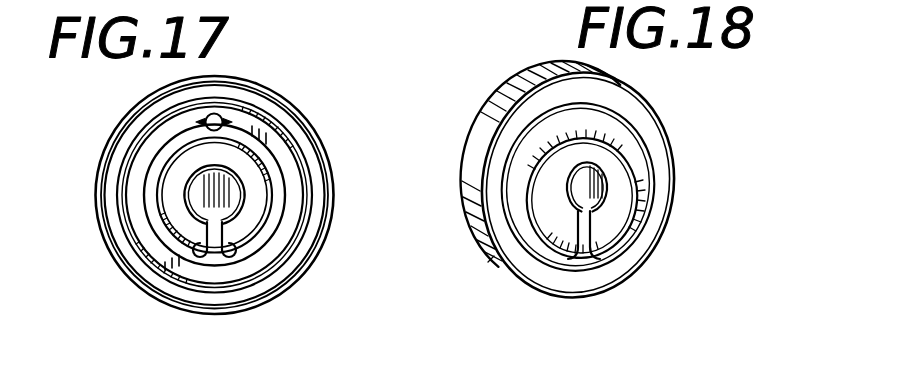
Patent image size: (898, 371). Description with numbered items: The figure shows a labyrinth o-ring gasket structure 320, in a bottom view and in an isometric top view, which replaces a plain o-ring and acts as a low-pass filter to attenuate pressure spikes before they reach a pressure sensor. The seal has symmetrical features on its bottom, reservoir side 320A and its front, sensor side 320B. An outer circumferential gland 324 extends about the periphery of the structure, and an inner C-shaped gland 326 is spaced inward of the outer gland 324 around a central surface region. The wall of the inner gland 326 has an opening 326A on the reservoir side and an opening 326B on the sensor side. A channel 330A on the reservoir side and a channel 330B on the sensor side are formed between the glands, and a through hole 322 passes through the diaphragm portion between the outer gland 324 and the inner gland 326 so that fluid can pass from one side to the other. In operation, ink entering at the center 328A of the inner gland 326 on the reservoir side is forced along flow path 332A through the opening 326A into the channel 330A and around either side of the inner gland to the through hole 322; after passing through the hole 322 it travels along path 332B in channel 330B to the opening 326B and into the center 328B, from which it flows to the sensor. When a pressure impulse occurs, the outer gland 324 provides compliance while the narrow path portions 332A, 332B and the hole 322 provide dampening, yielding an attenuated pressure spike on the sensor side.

In FIG. 17, the labyrinth o-ring gasket structure 320 is at (316, 269).
In FIG. 18, the labyrinth o-ring gasket structure 320 is at (656, 238).
In FIG. 17, the reservoir side 320A is at (294, 196).
In FIG. 18, the sensor side 320B is at (507, 216).
In FIG. 17, the through hole 322 is at (219, 115).
In FIG. 17, the outer circumferential gland 324 is at (118, 159).
In FIG. 18, the outer circumferential gland 324 is at (646, 114).
In FIG. 17, the inner C-shaped gland 326 is at (279, 150).
In FIG. 18, the inner C-shaped gland 326 is at (620, 172).
In FIG. 17, the opening 326A is at (227, 255).
In FIG. 18, the opening 326B is at (592, 266).
In FIG. 17, the center 328A is at (197, 197).
In FIG. 18, the center 328B is at (578, 174).
In FIG. 17, the channel 330A is at (160, 137).
In FIG. 18, the channel 330B is at (521, 207).
In FIG. 17, the flow path 332A is at (204, 257).
In FIG. 18, the path 332B is at (542, 262).